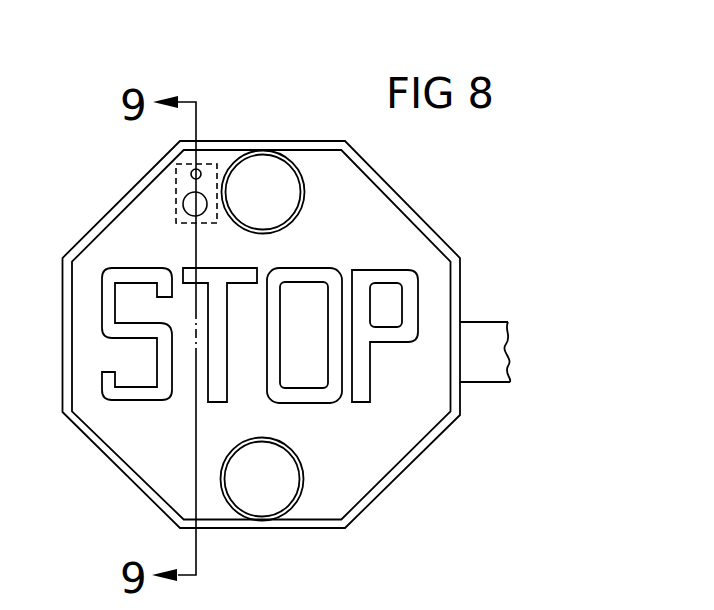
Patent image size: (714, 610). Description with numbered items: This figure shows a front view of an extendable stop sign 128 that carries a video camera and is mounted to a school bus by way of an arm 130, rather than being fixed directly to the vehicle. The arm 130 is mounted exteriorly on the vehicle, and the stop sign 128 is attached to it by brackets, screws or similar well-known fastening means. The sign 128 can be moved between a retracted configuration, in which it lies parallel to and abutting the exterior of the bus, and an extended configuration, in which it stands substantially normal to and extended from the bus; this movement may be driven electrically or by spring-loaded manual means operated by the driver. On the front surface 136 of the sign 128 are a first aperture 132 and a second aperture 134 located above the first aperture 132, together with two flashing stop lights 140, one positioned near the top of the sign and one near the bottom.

The stop sign panel 128 is at (275, 141).
The mounting post 130 is at (483, 372).
The sensor 132 is at (186, 194).
The indicator light 134 is at (190, 173).
The sign border 136 is at (105, 422).
The strobe lamps 140 is at (244, 179).